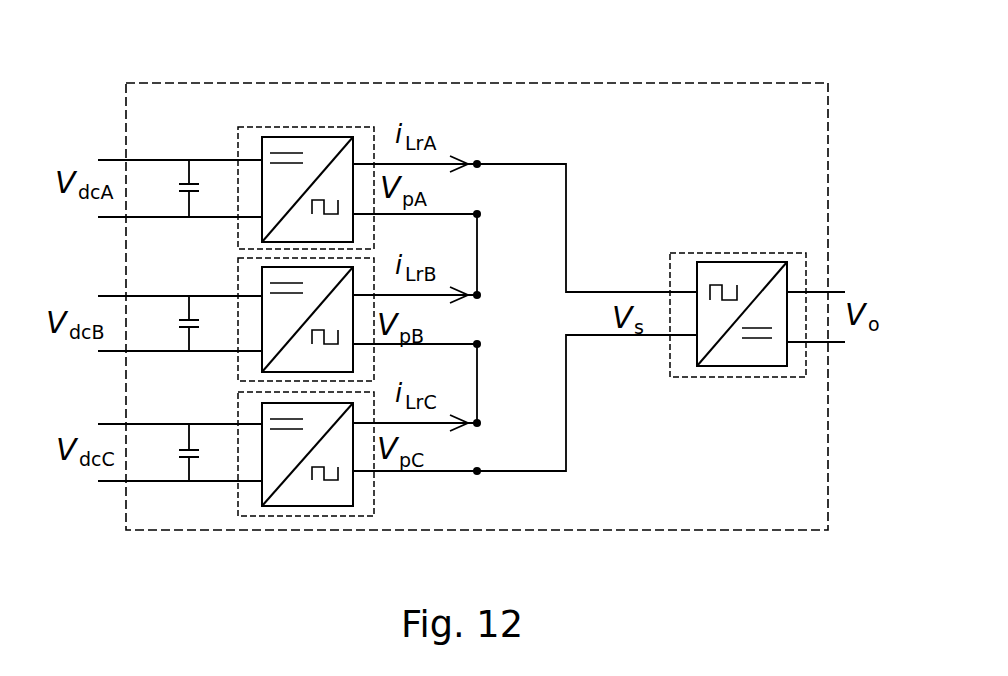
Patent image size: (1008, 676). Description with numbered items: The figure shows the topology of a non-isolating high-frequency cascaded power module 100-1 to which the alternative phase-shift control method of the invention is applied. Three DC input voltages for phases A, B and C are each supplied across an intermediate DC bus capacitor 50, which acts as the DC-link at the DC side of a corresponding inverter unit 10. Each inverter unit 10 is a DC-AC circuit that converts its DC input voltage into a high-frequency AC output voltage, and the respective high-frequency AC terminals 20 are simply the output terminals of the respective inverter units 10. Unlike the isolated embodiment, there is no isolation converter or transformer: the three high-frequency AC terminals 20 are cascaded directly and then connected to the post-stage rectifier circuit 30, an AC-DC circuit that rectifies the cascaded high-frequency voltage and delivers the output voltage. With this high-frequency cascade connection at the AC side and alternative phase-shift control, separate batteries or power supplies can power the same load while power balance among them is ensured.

The non-isolating high-frequency cascaded power module 100-1 is at (710, 83).
The intermediate DC bus capacitor 50 is at (185, 160).
The inverter unit 10 is at (293, 127).
The high-frequency AC terminal 20 is at (477, 160).
The post-stage rectifier circuit 30 is at (740, 253).